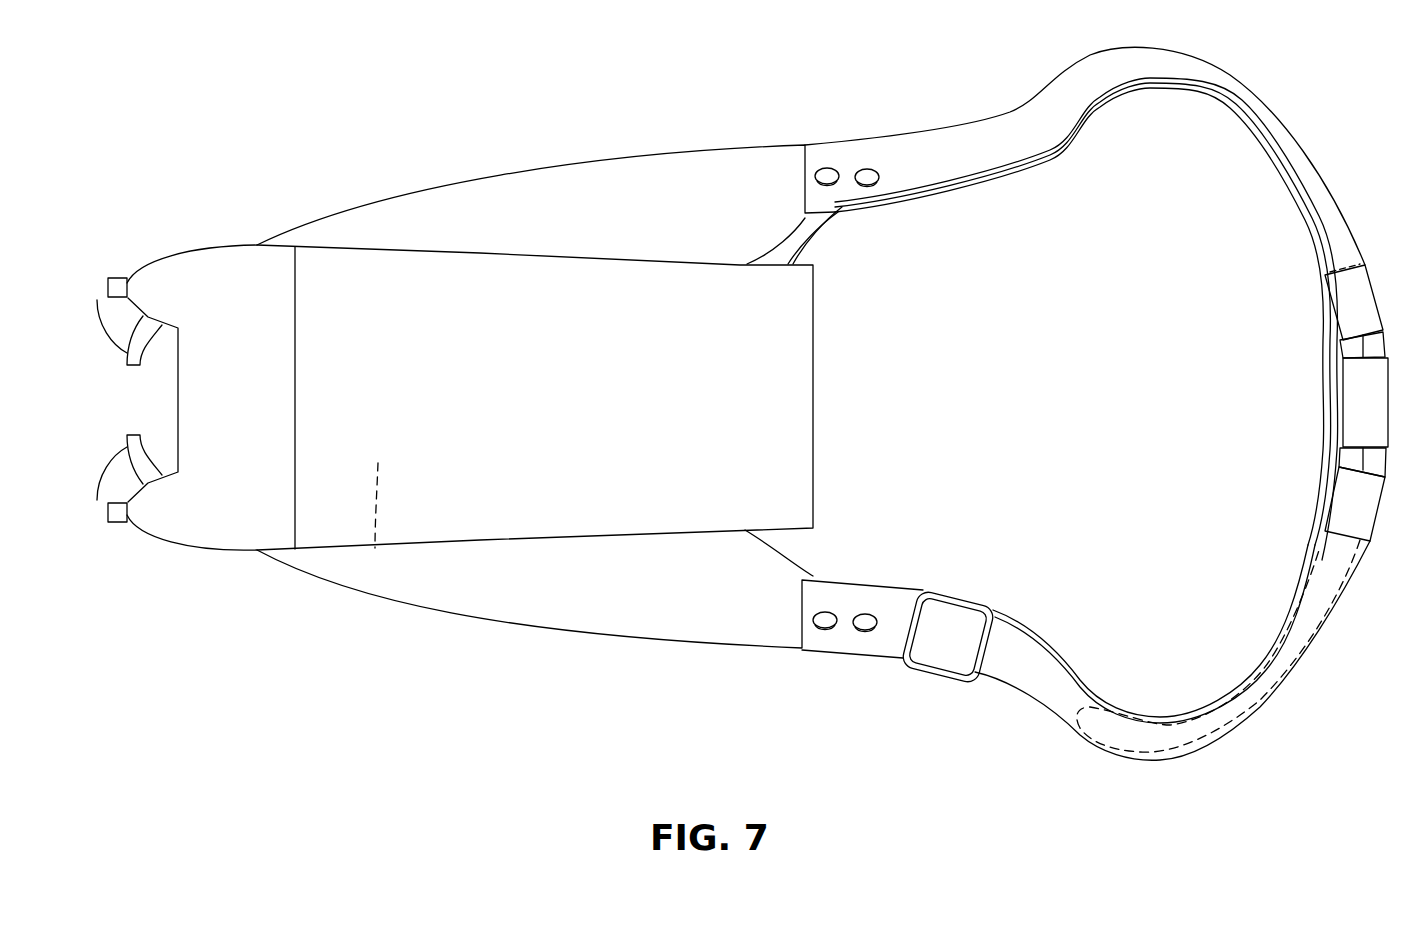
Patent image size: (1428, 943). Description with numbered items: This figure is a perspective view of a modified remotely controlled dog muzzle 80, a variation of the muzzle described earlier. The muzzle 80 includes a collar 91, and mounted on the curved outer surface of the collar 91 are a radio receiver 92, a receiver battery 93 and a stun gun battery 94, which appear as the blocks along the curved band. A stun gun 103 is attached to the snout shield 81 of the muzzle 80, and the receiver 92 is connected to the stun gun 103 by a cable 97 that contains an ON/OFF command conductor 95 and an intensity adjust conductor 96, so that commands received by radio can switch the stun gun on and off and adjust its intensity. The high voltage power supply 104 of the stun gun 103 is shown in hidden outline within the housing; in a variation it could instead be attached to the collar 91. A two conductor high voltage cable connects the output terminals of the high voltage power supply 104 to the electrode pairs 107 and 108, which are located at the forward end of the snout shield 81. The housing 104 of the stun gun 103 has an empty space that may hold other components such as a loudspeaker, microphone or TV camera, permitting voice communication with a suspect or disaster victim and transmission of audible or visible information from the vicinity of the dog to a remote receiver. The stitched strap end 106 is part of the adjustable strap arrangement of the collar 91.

The modified remotely controlled dog muzzle 80 is at (420, 83).
The snout shield 81 is at (644, 152).
The collar 91 is at (1010, 112).
The radio receiver 92 is at (1388, 392).
The receiver battery 93 is at (1377, 518).
The stun gun battery 94 is at (1376, 292).
The ON/OFF command conductor 95 is at (813, 230).
The intensity adjust conductor 96 is at (813, 238).
The cable 97 is at (817, 235).
The stun gun 103 is at (182, 548).
The high voltage power supply 104 is at (375, 550).
The stitched strap end 106 is at (1253, 673).
The electrode pair 107 is at (113, 278).
The electrode pair 108 is at (97, 300).